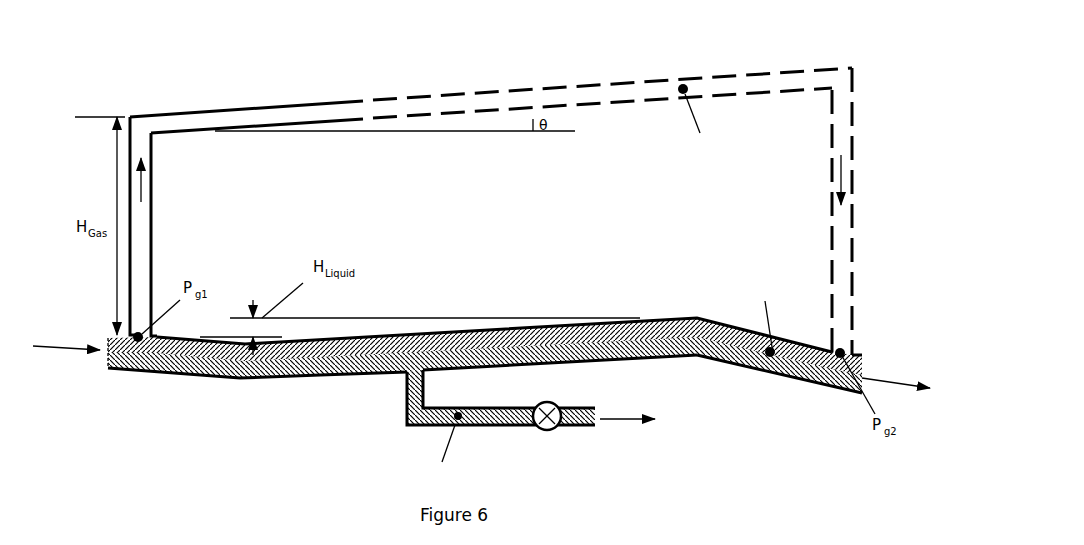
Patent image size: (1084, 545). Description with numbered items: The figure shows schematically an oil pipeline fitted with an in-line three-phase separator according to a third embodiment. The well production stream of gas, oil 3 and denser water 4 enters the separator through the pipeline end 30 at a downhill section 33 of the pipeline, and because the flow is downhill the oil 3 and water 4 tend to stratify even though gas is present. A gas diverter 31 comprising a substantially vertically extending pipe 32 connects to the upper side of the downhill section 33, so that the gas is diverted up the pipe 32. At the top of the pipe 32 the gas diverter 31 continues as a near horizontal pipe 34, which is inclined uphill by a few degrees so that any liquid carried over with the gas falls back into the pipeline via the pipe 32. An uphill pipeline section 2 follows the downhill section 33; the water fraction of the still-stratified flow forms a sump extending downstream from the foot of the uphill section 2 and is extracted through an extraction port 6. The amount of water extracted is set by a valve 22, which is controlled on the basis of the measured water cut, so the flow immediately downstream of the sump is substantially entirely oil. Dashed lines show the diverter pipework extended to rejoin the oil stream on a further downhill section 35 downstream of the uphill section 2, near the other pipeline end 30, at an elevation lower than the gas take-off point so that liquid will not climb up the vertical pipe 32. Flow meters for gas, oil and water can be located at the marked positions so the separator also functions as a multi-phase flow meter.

The upwardly inclined section 2 is at (495, 325).
The oil 3 is at (481, 379).
The water 4 is at (300, 380).
The extraction port 6 is at (425, 388).
The valve 22 is at (547, 431).
The channel end opening 30 is at (117, 372).
The gas diverter 31 is at (491, 186).
The substantially vertically extending pipe 32 is at (152, 240).
The downhill section 33 is at (202, 384).
The near horizontal pipe 34 is at (232, 108).
The downhill section 35 is at (815, 383).